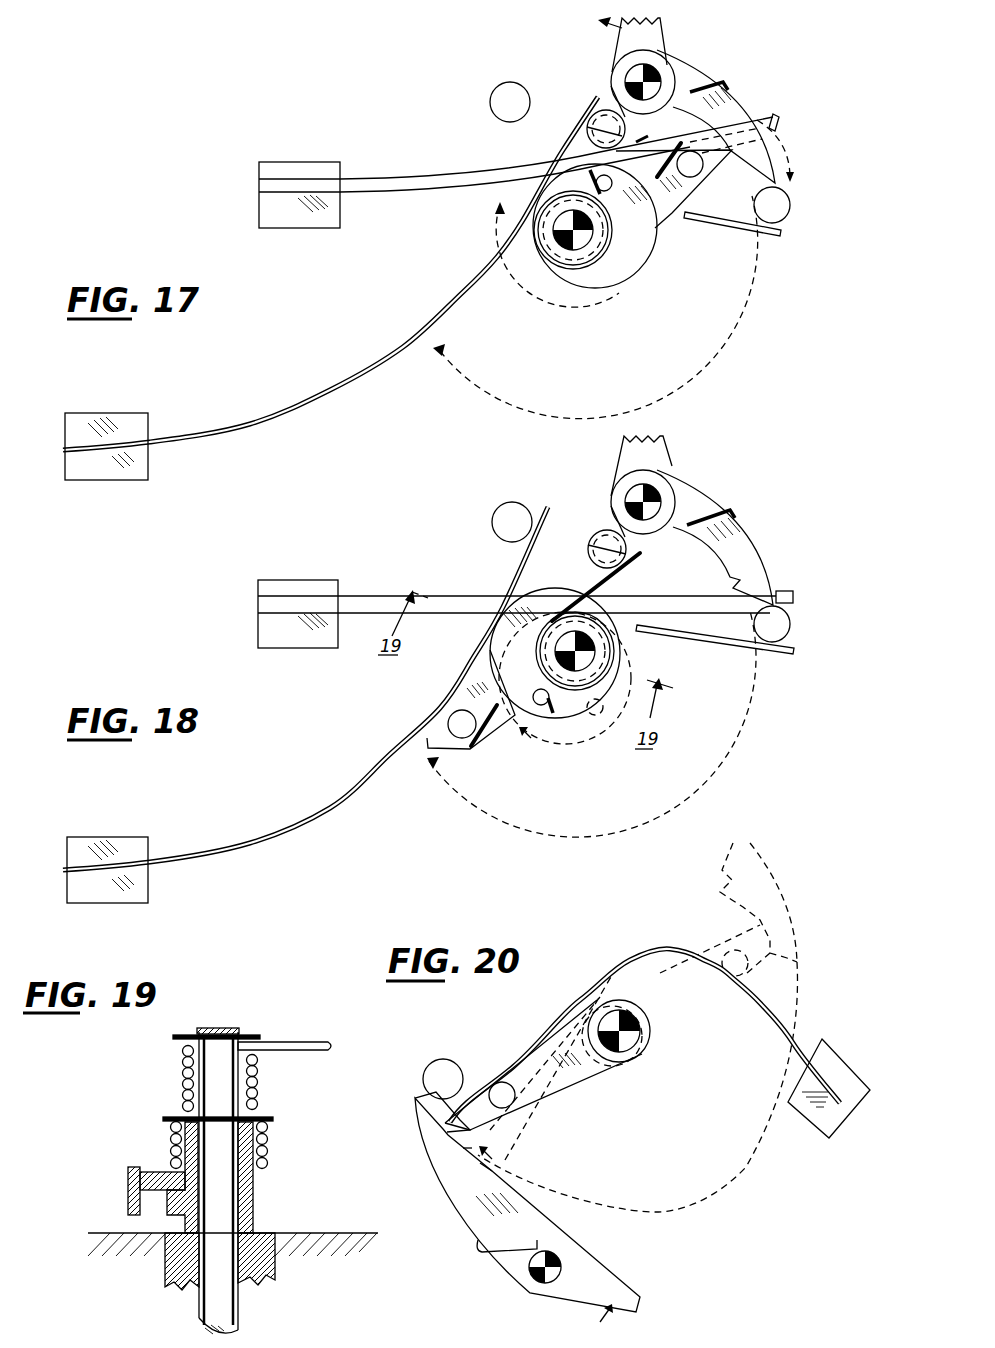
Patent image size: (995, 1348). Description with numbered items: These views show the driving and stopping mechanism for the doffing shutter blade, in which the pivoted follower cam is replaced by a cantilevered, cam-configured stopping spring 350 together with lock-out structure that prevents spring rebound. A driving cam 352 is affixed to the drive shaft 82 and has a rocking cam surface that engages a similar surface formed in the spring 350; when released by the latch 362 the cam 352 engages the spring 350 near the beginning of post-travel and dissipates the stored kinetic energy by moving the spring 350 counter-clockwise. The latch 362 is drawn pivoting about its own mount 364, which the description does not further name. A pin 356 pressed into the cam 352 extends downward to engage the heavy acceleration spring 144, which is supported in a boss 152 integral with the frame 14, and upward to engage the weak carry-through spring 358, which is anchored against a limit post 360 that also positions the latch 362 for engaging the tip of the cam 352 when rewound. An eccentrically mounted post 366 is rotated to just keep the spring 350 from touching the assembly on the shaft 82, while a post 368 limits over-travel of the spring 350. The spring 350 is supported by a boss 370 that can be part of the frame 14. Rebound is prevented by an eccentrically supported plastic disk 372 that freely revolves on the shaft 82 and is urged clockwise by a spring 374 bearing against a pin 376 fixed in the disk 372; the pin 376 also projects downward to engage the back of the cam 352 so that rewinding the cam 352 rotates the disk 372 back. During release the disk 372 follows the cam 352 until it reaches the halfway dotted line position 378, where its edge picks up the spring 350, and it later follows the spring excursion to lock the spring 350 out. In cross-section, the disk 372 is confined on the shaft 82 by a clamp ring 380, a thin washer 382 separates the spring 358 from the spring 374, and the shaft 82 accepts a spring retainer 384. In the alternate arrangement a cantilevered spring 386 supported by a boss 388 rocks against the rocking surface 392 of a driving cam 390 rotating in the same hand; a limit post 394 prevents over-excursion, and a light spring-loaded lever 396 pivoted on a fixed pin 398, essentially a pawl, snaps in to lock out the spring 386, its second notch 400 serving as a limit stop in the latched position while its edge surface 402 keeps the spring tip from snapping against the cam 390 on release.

In FIG. 19, the frame 14 is at (340, 1247).
In FIG. 17, the drive shaft 82 is at (560, 240).
In FIG. 18, the drive shaft 82 is at (614, 648).
In FIG. 19, the drive shaft 82 is at (220, 1028).
In FIG. 20, the drive shaft 82 is at (638, 1022).
In FIG. 17, the acceleration spring 144 is at (404, 185).
In FIG. 18, the acceleration spring 144 is at (387, 572).
In FIG. 17, the boss 152 is at (267, 210).
In FIG. 18, the boss 152 is at (263, 630).
In FIG. 17, the cantilevered cam-configured spring 350 is at (403, 345).
In FIG. 18, the cantilevered cam-configured spring 350 is at (388, 755).
In FIG. 19, the cantilevered cam-configured spring 350 is at (128, 1178).
In FIG. 17, the driving cam 352 is at (694, 186).
In FIG. 18, the driving cam 352 is at (426, 744).
In FIG. 19, the driving cam 352 is at (253, 1210).
In FIG. 17, the pin 356 is at (677, 185).
In FIG. 18, the pin 356 is at (460, 740).
In FIG. 17, the weak carry-through spring 358 is at (760, 234).
In FIG. 18, the weak carry-through spring 358 is at (752, 642).
In FIG. 19, the weak carry-through spring 358 is at (332, 1024).
In FIG. 17, the limit post 360 is at (782, 202).
In FIG. 18, the limit post 360 is at (782, 630).
In FIG. 17, the latch 362 is at (733, 98).
In FIG. 18, the latch 362 is at (698, 498).
In FIG. 17, the pivot shaft 364 is at (652, 74).
In FIG. 18, the pivot shaft 364 is at (655, 488).
In FIG. 17, the post 366 is at (593, 112).
In FIG. 18, the post 366 is at (602, 532).
In FIG. 17, the post 368 is at (492, 100).
In FIG. 18, the post 368 is at (500, 520).
In FIG. 17, the boss 370 is at (135, 458).
In FIG. 18, the boss 370 is at (135, 880).
In FIG. 17, the eccentrically supported disk 372 is at (636, 257).
In FIG. 18, the eccentrically supported disk 372 is at (547, 603).
In FIG. 19, the eccentrically supported disk 372 is at (160, 1172).
In FIG. 17, the spring 374 is at (636, 138).
In FIG. 18, the spring 374 is at (620, 568).
In FIG. 19, the spring 374 is at (268, 1126).
In FIG. 17, the pin 376 is at (598, 178).
In FIG. 18, the pin 376 is at (536, 708).
In FIG. 18, the halfway dotted line position 378 is at (596, 716).
In FIG. 19, the clamp ring 380 is at (170, 1133).
In FIG. 19, the thin washer 382 is at (177, 1117).
In FIG. 19, the spring retainer 384 is at (180, 1038).
In FIG. 20, the cantilevered spring 386 is at (650, 955).
In FIG. 20, the boss 388 is at (813, 1135).
In FIG. 20, the driving cam 390 is at (549, 1088).
In FIG. 20, the rocking surface 392 is at (537, 1028).
In FIG. 20, the limit post 394 is at (441, 1072).
In FIG. 20, the spring-loaded lever 396 is at (581, 1263).
In FIG. 20, the fixed pin 398 is at (541, 1278).
In FIG. 20, the second notch 400 is at (490, 1180).
In FIG. 20, the surface 402 is at (463, 1148).